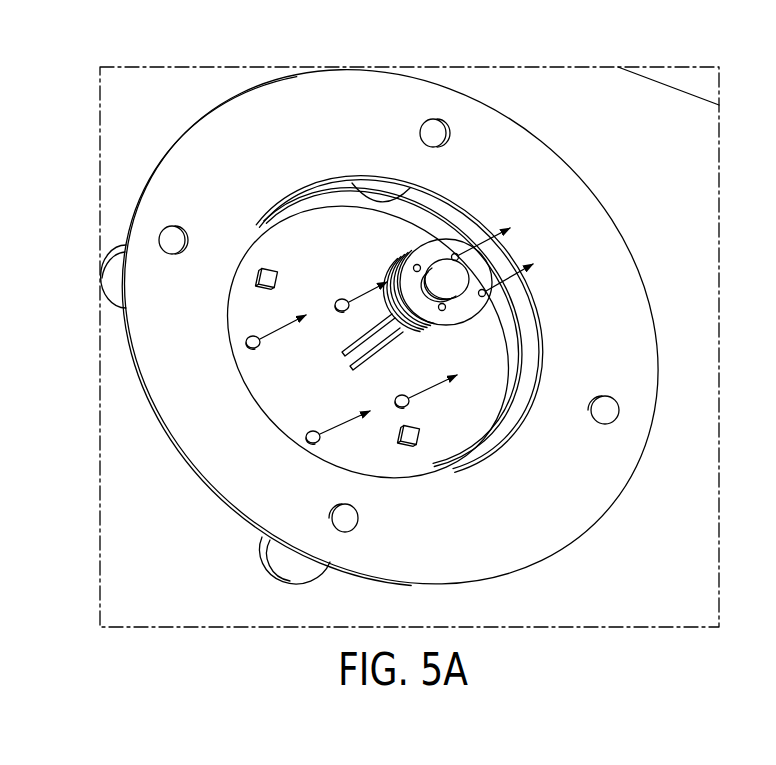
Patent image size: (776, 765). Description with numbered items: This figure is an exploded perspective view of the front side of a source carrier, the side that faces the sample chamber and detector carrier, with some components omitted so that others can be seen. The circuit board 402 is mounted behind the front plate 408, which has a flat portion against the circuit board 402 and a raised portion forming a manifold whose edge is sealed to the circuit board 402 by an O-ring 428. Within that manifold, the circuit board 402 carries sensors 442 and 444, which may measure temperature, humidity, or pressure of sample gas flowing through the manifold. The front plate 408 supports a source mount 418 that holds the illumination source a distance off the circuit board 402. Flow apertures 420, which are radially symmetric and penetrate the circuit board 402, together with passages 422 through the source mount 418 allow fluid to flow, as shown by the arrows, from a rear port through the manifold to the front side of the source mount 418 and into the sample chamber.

The circuit board 402 is at (698, 130).
The front plate 408 is at (338, 95).
The O-ring 428 is at (328, 204).
The sensor 442 is at (257, 285).
The sensor 444 is at (413, 447).
The source mount 418 is at (443, 328).
The flow apertures 420 is at (396, 400).
The passages 422 is at (476, 268).